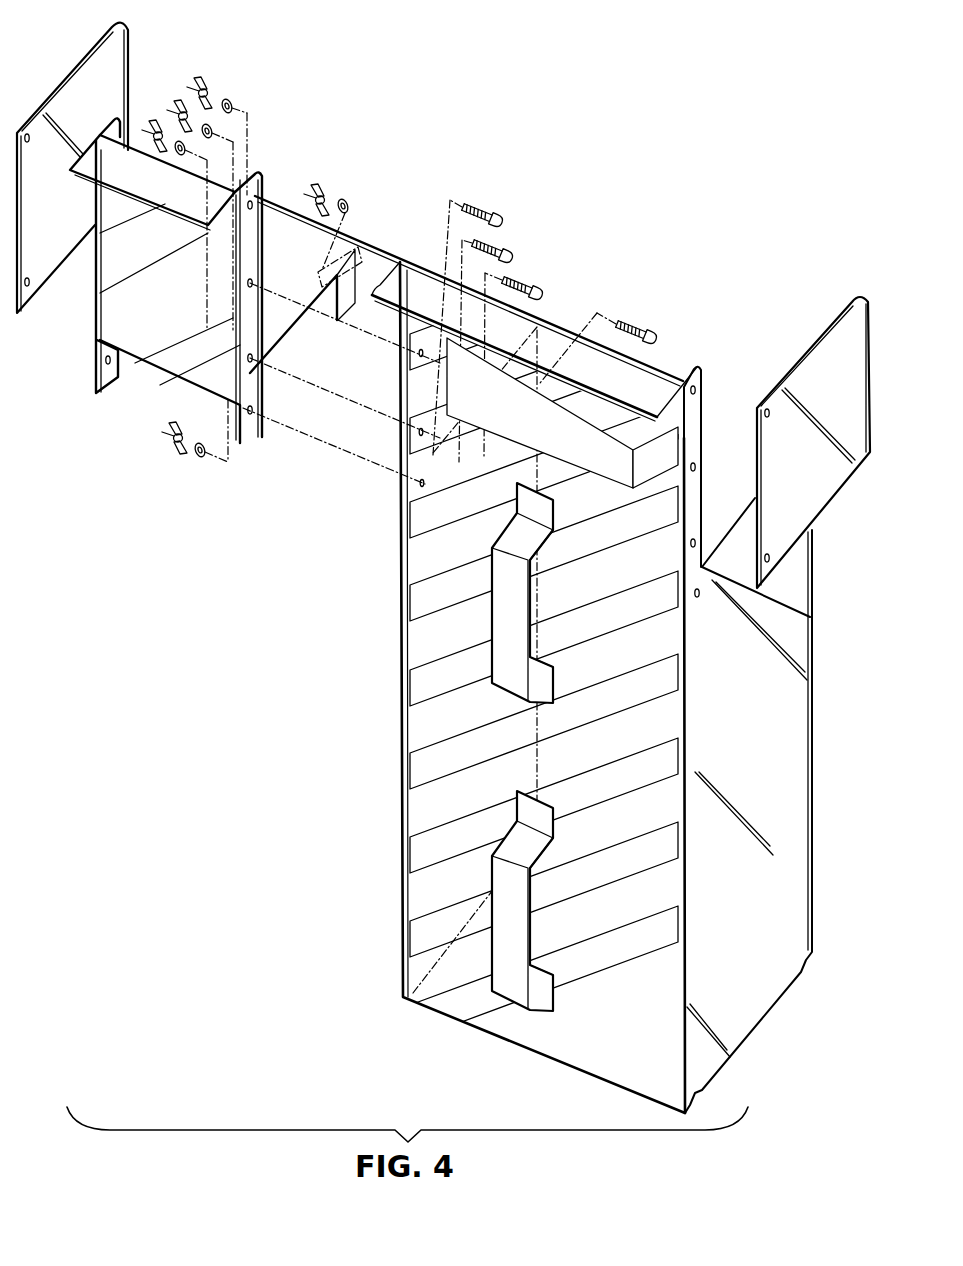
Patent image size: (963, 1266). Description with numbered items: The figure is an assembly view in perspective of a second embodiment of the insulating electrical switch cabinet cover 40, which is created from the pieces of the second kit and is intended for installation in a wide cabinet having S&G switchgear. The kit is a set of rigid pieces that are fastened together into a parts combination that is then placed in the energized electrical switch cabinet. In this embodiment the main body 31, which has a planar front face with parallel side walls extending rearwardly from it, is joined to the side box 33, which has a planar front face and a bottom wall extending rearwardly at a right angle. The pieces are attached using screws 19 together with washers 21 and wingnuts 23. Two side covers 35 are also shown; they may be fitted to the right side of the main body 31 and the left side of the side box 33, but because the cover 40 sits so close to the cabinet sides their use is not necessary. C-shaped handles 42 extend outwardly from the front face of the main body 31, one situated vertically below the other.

The screws 19 is at (478, 210).
The washers 21 is at (352, 213).
The wingnuts 23 is at (318, 190).
The main body 31 is at (418, 735).
The side box 33 is at (90, 283).
The side covers 35 is at (66, 100).
The insulating electrical switch cabinet cover 40 is at (551, 182).
The clips 42 is at (513, 598).